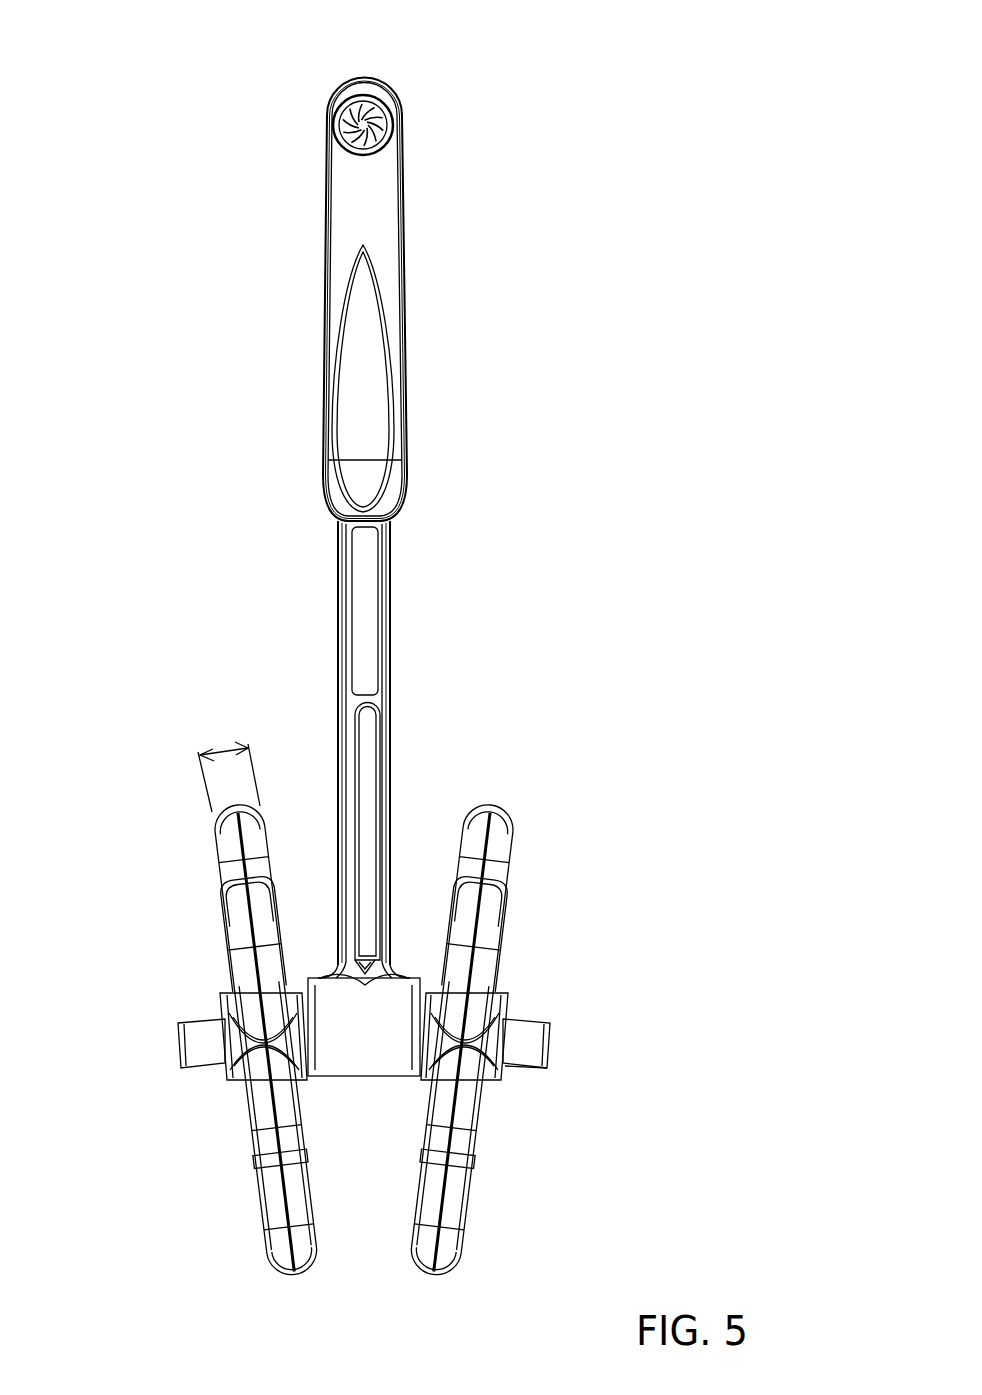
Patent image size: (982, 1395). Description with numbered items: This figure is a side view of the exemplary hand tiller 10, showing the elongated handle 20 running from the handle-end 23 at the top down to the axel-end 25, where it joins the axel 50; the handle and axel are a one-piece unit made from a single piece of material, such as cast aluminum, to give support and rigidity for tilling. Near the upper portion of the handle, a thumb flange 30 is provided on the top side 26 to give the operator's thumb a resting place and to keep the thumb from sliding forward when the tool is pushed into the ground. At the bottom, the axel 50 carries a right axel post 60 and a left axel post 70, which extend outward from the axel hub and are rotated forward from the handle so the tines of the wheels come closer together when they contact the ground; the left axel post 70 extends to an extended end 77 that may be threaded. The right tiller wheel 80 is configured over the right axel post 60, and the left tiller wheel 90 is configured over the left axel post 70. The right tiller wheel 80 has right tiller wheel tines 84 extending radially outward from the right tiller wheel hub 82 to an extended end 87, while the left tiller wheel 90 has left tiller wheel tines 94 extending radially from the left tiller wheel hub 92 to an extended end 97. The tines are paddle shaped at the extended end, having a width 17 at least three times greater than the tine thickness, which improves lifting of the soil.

The hand tiller 10 is at (170, 285).
The handle 20 is at (388, 263).
The handle-end 23 is at (365, 80).
The top side 26 is at (385, 195).
The thumb flange 30 is at (400, 490).
The axel-end 25 is at (395, 980).
The axel 50 is at (330, 1007).
The width 17 is at (223, 752).
The right tiller wheel 80 is at (240, 953).
The right tiller wheel hub 82 is at (220, 1018).
The right tiller wheel tines 84 is at (238, 918).
The extended end 87 is at (183, 1057).
The right axel post 60 is at (205, 1042).
The left axel post 70 is at (523, 1038).
The extended end 77 is at (548, 1060).
The left tiller wheel 90 is at (486, 940).
The left tiller wheel hub 92 is at (510, 1017).
The left tiller wheel tines 94 is at (480, 965).
The extended end 97 is at (505, 877).